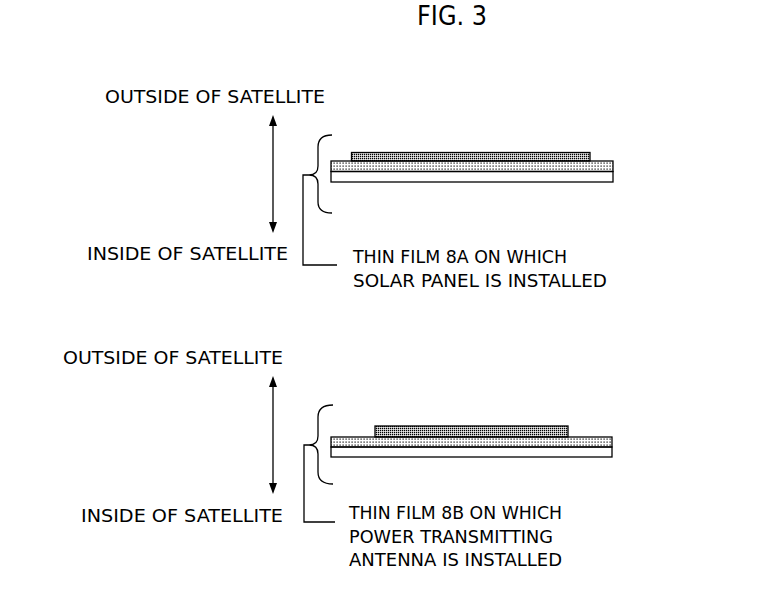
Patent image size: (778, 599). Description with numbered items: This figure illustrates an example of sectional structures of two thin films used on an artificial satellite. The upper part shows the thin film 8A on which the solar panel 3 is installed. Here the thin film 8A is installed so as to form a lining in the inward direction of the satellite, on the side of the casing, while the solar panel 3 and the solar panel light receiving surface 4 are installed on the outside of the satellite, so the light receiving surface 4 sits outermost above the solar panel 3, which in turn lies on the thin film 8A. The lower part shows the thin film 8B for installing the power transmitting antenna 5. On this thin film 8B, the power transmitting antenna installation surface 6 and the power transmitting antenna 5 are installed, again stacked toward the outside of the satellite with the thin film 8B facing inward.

The solar panel 3 is at (597, 167).
The solar panel light receiving surface 4 is at (562, 156).
The thin film 8A is at (573, 177).
The power transmitting antenna 5 is at (558, 432).
The power transmitting antenna installation surface 6 is at (595, 442).
The thin film 8B is at (573, 453).